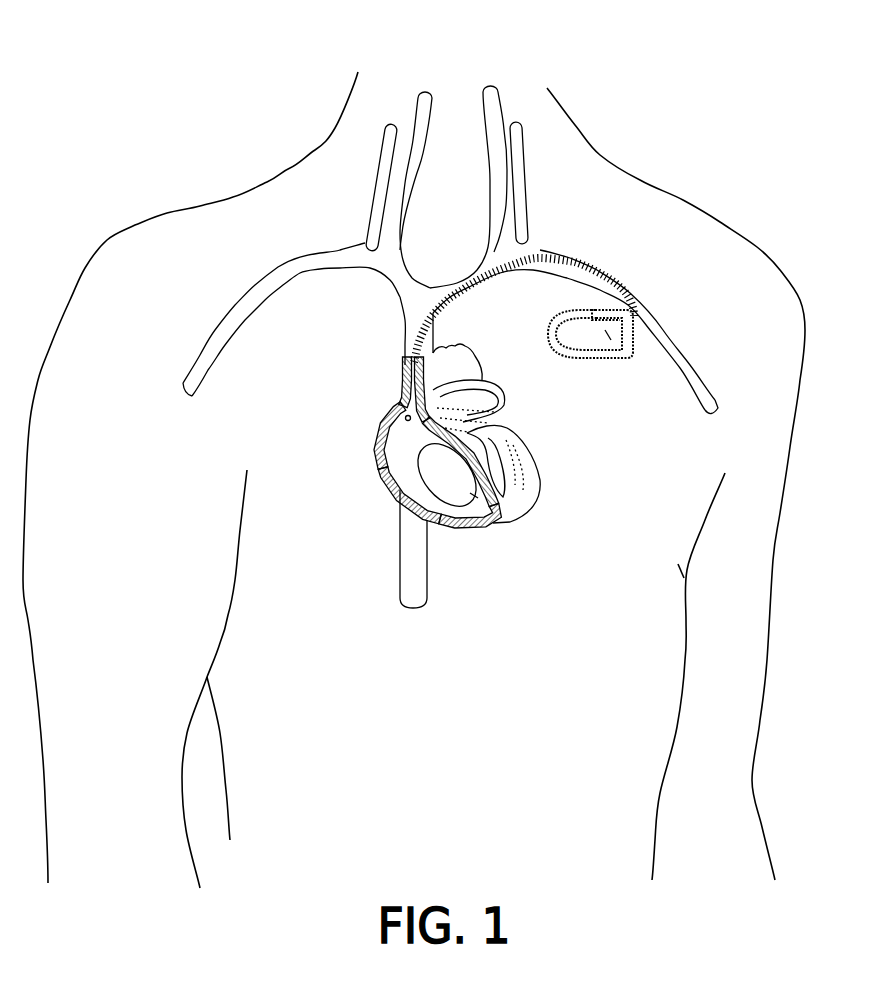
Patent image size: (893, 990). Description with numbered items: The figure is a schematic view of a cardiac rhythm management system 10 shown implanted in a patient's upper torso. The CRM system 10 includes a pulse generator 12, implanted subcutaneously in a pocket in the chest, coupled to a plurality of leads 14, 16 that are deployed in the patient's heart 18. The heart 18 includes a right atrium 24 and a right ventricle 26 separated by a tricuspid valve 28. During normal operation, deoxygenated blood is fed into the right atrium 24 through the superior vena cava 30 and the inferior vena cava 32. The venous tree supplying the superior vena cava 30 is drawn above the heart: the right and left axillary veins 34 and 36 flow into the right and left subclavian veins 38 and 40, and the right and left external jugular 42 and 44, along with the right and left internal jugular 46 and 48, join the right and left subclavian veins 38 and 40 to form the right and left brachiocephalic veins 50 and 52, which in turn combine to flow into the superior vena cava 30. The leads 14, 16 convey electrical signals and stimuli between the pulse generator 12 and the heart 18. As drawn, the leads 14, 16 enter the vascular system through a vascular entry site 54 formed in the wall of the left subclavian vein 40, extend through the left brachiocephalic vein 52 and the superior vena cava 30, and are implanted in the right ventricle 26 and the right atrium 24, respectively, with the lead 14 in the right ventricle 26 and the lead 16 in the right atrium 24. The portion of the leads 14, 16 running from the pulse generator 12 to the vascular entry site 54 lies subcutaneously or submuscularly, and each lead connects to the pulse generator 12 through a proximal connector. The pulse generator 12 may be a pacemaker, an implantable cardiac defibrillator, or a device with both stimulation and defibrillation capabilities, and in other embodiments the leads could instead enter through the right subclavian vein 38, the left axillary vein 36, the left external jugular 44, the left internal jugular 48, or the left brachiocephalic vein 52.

The cardiac rhythm management system 10 is at (246, 84).
The pulse generator 12 is at (610, 350).
The lead 14 is at (440, 527).
The lead 16 is at (398, 390).
The heart 18 is at (548, 509).
The right atrium 24 is at (392, 444).
The right ventricle 26 is at (507, 526).
The tricuspid valve 28 is at (405, 490).
The superior vena cava 30 is at (400, 343).
The inferior vena cava 32 is at (400, 550).
The right axillary vein 34 is at (182, 385).
The left axillary vein 36 is at (718, 398).
The right subclavian vein 38 is at (213, 300).
The left subclavian vein 40 is at (540, 250).
The right external jugular 42 is at (370, 196).
The left external jugular 44 is at (527, 205).
The right internal jugular 46 is at (412, 115).
The left internal jugular 48 is at (492, 112).
The right brachiocephalic vein 50 is at (380, 260).
The left brachiocephalic vein 52 is at (490, 262).
The vascular entry site 54 is at (642, 292).